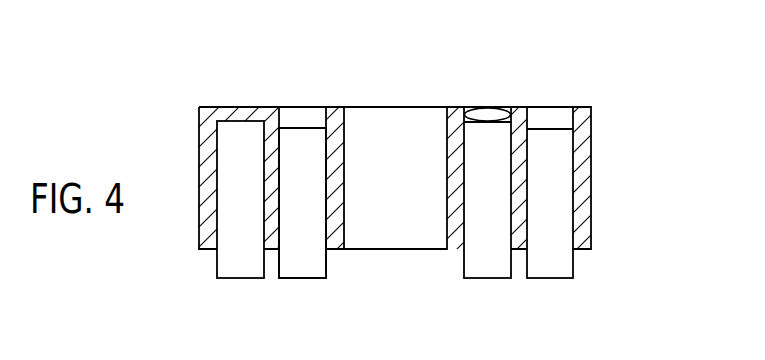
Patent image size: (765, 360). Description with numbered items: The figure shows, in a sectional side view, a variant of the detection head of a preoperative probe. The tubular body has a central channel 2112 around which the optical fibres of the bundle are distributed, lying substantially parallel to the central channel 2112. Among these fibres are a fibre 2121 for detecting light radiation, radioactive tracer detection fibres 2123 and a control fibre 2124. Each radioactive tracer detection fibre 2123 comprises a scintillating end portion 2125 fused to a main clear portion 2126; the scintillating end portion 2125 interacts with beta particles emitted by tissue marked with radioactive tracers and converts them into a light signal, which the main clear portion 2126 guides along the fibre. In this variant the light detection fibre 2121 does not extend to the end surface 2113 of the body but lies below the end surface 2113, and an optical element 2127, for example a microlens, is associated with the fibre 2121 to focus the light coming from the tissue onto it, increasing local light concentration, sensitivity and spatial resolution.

The central channel 2112 is at (393, 128).
The end surface 2113 is at (582, 108).
The fibre for detecting light radiation 2121 is at (483, 263).
The radioactive tracer detection fibre 2123 is at (302, 262).
The control fibre 2124 is at (232, 269).
The scintillating end portion 2125 is at (299, 117).
The main clear portion 2126 is at (300, 179).
The optical element 2127 is at (485, 113).